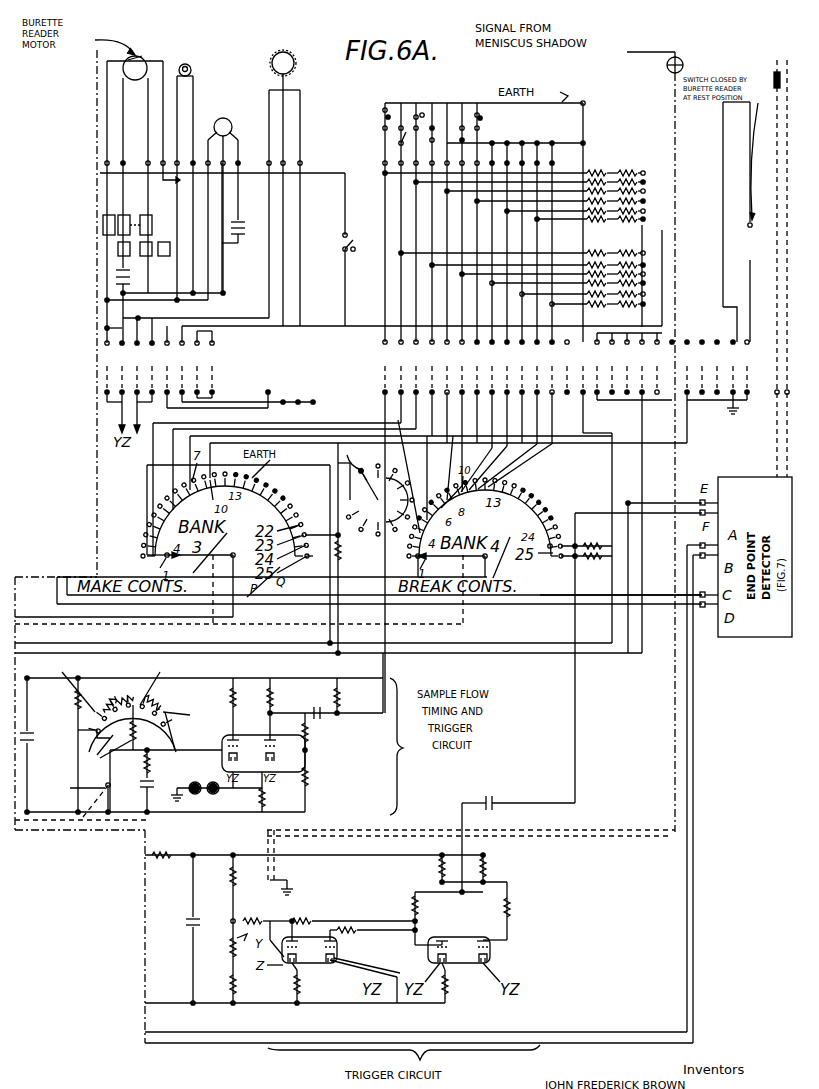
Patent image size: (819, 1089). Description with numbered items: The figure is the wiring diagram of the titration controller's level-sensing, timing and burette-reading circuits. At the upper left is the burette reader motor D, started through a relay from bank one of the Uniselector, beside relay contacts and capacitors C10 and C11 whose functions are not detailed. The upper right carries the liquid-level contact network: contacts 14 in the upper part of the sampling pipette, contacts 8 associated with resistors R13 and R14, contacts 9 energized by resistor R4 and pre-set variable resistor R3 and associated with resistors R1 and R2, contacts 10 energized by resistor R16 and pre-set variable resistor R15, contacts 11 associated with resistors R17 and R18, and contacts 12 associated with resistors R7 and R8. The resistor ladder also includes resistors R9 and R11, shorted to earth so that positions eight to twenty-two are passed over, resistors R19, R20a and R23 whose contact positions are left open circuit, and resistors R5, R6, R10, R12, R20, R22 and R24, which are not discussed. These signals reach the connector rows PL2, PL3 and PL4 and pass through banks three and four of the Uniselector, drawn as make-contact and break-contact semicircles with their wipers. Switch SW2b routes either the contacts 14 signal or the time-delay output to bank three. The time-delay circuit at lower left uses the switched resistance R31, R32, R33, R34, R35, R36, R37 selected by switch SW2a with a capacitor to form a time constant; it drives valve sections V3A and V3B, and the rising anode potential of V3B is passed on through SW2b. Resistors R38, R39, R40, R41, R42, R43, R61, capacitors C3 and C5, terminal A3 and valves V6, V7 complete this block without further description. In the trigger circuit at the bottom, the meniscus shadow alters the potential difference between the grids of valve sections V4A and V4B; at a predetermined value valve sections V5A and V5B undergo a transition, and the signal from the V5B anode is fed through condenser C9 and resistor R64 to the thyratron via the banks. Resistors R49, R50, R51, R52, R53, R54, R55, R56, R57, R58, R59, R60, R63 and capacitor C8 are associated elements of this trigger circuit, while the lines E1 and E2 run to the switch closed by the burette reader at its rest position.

The motor D is at (140, 58).
The switch closed by burette reader at rest position E1 is at (774, 70).
The switch terminal E2 is at (788, 62).
The electrical contacts 8 is at (400, 140).
The electric contacts 9 is at (413, 115).
The electrical contacts 10 is at (432, 138).
The electrical contacts 11 is at (464, 136).
The electrical contacts 12 is at (482, 120).
The electrical contacts 14 is at (385, 117).
The capacitor C3 is at (39, 740).
The capacitor C5 is at (325, 722).
The capacitor C8 is at (186, 922).
The condenser C9 is at (501, 800).
The capacitor C10 is at (131, 281).
The capacitor C11 is at (246, 228).
The resistor R1 is at (620, 173).
The resistor R2 is at (630, 182).
The pre-set variable resistor R3 is at (596, 182).
The resistor R4 is at (632, 191).
The resistor R5 is at (597, 191).
The resistor R6 is at (640, 182).
The resistor R7 is at (590, 173).
The resistor R8 is at (643, 191).
The resistor R9 is at (600, 201).
The resistor R10 is at (643, 201).
The resistor R11 is at (600, 211).
The resistor R12 is at (643, 219).
The resistor R13 is at (590, 274).
The resistor R14 is at (598, 265).
The pre-set variable resistor R15 is at (598, 265).
The resistor R16 is at (643, 253).
The resistor R17 is at (600, 274).
The resistor R18 is at (643, 274).
The resistor R19 is at (600, 283).
The resistor R20 is at (643, 283).
The resistor R20a is at (590, 304).
The resistor R22 is at (643, 294).
The resistor R23 is at (625, 304).
The resistor R24 is at (643, 304).
The resistor R31 is at (60, 745).
The resistor R32 is at (78, 730).
The resistor R33 is at (118, 695).
The resistor R34 is at (122, 710).
The resistor R35 is at (146, 727).
The resistor R36 is at (165, 705).
The resistor R37 is at (176, 751).
The resistor R38 is at (131, 763).
The resistor R39 is at (214, 709).
The resistor R40 is at (287, 709).
The resistor R41 is at (353, 696).
The resistor R42 is at (321, 737).
The resistor R43 is at (321, 776).
The resistor R49 is at (217, 921).
The resistor R50 is at (250, 986).
The resistor R51 is at (245, 919).
The resistor R52 is at (312, 983).
The resistor R53 is at (352, 911).
The resistor R54 is at (352, 918).
The resistor R55 is at (421, 868).
The resistor R56 is at (499, 868).
The resistor R57 is at (394, 918).
The resistor R58 is at (512, 911).
The resistor R59 is at (461, 983).
The resistor R60 is at (165, 858).
The resistor R61 is at (268, 800).
The resistor R63 is at (590, 544).
The resistor R64 is at (590, 558).
The valve section V3A is at (224, 748).
The valve section V3B is at (298, 760).
The valve section V4A is at (309, 975).
The valve section V4B is at (362, 980).
The valve section V5A is at (439, 959).
The valve section V5B is at (501, 961).
The indicator valve V6 is at (192, 796).
The indicator valve V7 is at (219, 796).
The switch SW2a is at (112, 740).
The switch SW2b is at (363, 520).
The terminal A3 is at (75, 795).
The plug connector PL2 is at (575, 378).
The plug connector PL3 is at (328, 347).
The plug connector PL4 is at (773, 379).